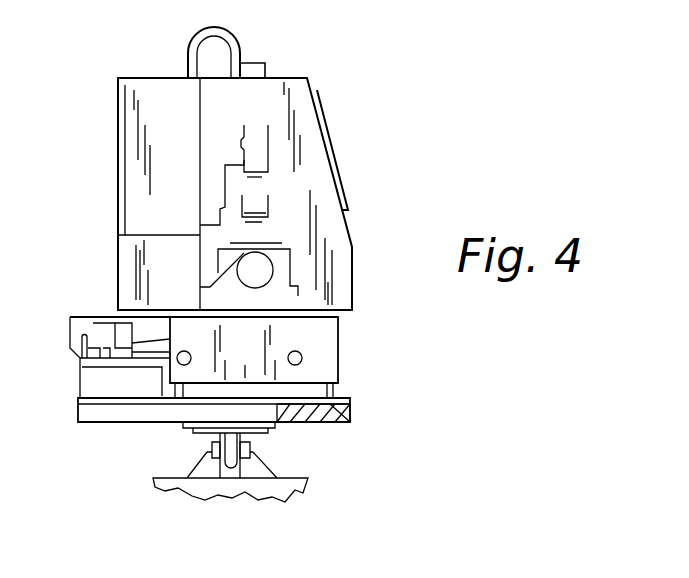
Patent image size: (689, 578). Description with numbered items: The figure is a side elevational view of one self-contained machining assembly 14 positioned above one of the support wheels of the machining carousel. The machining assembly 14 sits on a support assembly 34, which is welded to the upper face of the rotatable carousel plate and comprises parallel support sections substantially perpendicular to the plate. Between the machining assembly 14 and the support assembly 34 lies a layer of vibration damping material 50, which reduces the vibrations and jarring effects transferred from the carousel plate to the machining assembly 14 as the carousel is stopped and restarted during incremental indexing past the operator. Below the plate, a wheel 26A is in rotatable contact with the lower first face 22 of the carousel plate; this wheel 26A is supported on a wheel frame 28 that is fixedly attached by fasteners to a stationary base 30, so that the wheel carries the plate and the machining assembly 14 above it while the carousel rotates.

The self-contained machining assembly 14 is at (229, 115).
The first face 22 is at (260, 433).
The first wheel 26A is at (210, 446).
The wheel frame 28 is at (253, 465).
The base 30 is at (177, 490).
The support assembly 34 is at (347, 410).
The vibration damping material 50 is at (340, 425).